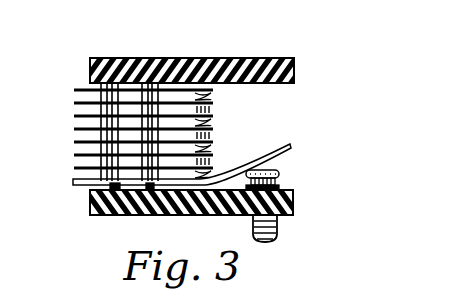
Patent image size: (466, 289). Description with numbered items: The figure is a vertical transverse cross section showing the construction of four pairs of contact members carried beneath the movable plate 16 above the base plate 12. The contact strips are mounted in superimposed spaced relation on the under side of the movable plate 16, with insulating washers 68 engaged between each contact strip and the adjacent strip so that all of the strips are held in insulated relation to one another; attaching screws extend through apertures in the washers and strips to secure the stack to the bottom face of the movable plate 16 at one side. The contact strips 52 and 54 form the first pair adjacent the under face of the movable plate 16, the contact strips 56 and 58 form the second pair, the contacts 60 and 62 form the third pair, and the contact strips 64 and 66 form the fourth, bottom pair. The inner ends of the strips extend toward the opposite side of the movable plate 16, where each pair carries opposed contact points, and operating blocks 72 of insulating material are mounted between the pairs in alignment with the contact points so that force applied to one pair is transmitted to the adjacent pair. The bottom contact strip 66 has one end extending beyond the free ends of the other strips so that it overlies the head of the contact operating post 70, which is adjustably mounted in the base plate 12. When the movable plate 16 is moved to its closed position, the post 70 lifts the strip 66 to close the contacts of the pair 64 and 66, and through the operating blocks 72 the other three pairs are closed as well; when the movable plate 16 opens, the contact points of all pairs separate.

The base plate 12 is at (194, 214).
The movable plate 16 is at (165, 58).
The contact strip 52 is at (213, 58).
The contact strip 54 is at (75, 90).
The contact strip 56 is at (75, 103).
The contact strip 58 is at (75, 116).
The contact 60 is at (75, 142).
The contact 62 is at (75, 155).
The contact strip 64 is at (75, 168).
The contact strip 66 is at (76, 182).
The insulating washers 68 is at (139, 110).
The contact operating post 70 is at (281, 173).
The operating blocks 72 is at (214, 176).